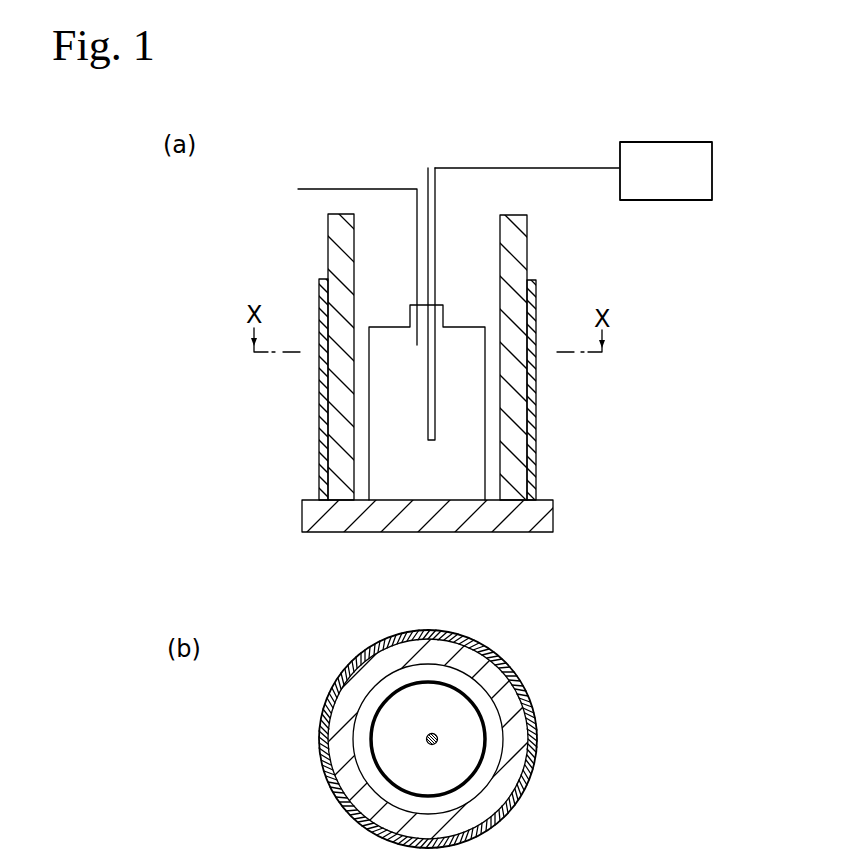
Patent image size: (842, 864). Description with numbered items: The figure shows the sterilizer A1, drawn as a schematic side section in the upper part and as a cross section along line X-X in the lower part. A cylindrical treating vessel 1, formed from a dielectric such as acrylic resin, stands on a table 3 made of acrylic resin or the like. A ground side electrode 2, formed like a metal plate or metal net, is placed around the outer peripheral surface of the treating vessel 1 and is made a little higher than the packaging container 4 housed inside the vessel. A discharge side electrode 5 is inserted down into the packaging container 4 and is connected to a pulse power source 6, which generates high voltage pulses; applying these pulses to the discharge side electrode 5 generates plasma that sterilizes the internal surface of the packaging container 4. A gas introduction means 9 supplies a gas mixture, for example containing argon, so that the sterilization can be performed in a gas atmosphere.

The sterilizer A1 is at (497, 153).
The treating vessel 1 is at (515, 242).
The ground side electrode 2 is at (533, 300).
The table 3 is at (538, 515).
The packaging container 4 is at (485, 375).
The discharge side electrode 5 is at (433, 395).
The pulse power source 6 is at (687, 195).
The gas introduction means 9 is at (330, 189).